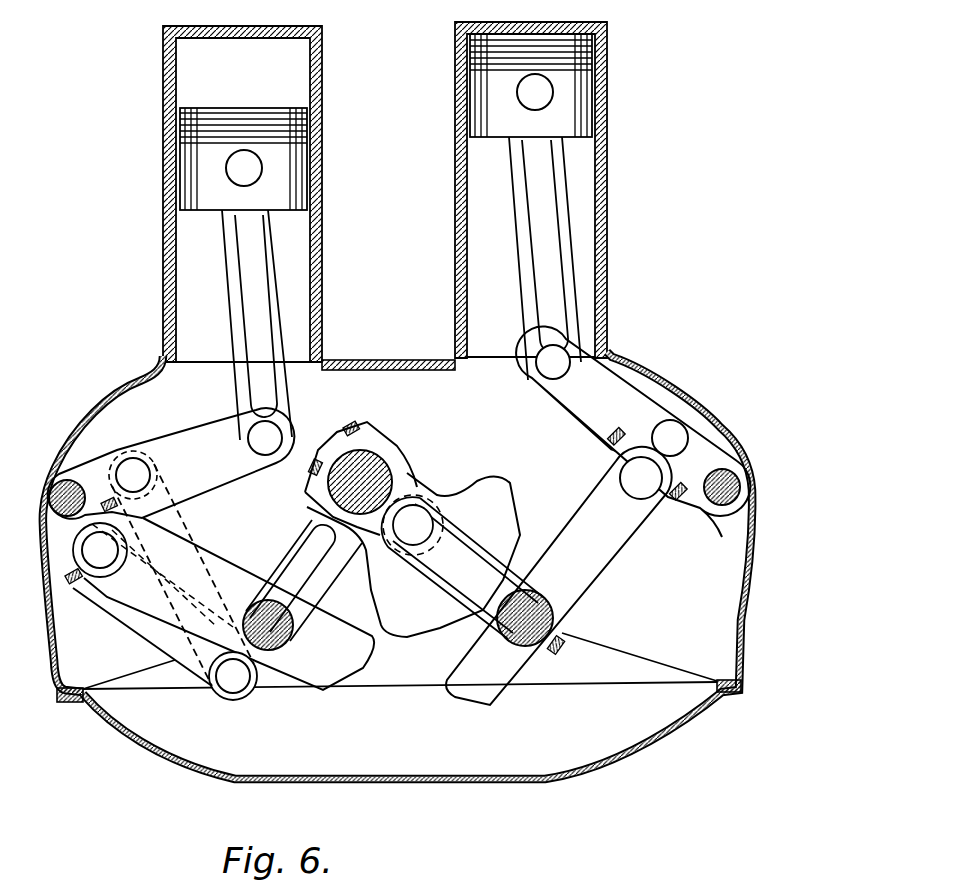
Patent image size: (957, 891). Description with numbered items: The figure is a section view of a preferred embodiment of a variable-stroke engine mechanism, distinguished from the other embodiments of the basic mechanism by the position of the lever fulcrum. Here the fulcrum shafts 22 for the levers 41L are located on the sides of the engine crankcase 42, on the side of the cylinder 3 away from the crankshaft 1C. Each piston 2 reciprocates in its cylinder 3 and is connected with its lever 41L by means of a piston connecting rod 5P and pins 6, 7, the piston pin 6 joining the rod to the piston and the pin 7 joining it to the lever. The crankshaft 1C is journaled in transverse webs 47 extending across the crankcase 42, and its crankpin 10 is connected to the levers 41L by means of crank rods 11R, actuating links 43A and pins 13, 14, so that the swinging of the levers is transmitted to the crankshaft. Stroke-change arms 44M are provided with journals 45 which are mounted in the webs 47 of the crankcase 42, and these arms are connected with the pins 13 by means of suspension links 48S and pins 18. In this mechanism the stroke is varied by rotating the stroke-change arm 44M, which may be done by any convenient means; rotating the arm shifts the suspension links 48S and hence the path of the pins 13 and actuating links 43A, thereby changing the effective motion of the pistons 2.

The crankshaft 1C is at (380, 548).
The piston 2 is at (312, 183).
The cylinder 3 is at (322, 74).
The piston connecting rod 5P is at (233, 302).
The piston pin 6 is at (238, 182).
The pin 7 is at (276, 444).
The crankpin 10 is at (378, 474).
The crank rod 11R is at (305, 541).
The pin 13 is at (233, 690).
The pin 14 is at (135, 468).
The pin 18 is at (92, 556).
The fulcrum shaft 22 is at (52, 516).
The lever 41L is at (216, 490).
The crankcase 42 is at (716, 413).
The actuating link 43A is at (183, 508).
The stroke-change arm 44M is at (355, 655).
The journal 45 is at (288, 622).
The transverse web 47 is at (128, 662).
The suspension link 48S is at (145, 616).